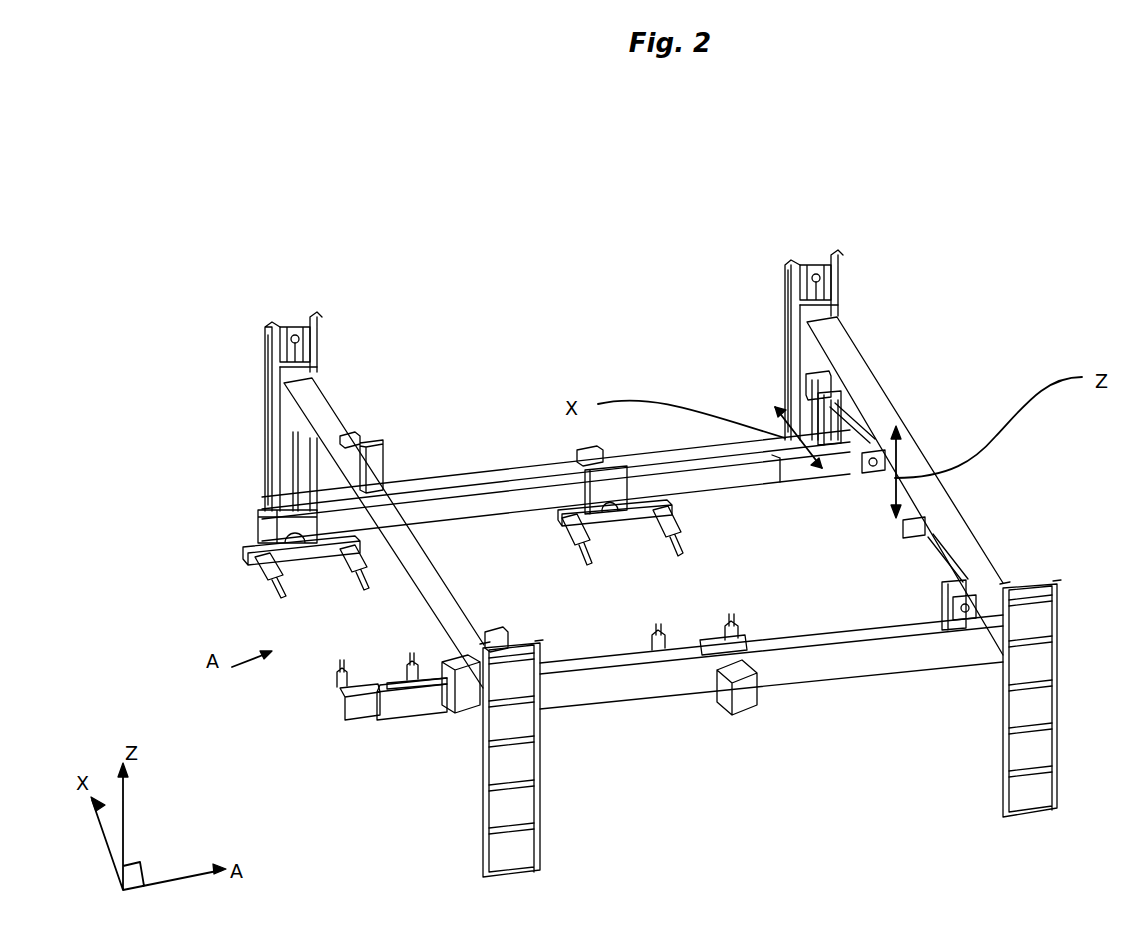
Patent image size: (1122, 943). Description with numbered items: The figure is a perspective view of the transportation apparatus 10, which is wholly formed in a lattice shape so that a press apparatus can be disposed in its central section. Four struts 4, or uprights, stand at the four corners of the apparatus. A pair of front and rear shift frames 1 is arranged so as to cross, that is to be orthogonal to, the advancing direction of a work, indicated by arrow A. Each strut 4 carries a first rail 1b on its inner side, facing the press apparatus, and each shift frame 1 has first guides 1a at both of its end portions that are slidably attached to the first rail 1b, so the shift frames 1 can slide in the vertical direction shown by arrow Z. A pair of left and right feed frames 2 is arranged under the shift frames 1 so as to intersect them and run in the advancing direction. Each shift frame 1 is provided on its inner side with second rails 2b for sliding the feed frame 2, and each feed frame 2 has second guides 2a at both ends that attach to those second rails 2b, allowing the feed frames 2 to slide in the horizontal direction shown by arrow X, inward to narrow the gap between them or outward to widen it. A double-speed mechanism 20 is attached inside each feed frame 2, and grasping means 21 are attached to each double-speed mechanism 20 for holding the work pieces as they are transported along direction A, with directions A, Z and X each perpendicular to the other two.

The shift frame 1 is at (412, 588).
The first guide 1a is at (318, 372).
The first rail 1b is at (283, 347).
The feed frame 2 is at (478, 470).
The second guide 2a is at (378, 443).
The second rail 2b is at (853, 470).
The strut 4 is at (318, 338).
The transportation apparatus 10 is at (957, 272).
The double-speed mechanism 20 is at (368, 667).
The grasping means 21 is at (278, 593).